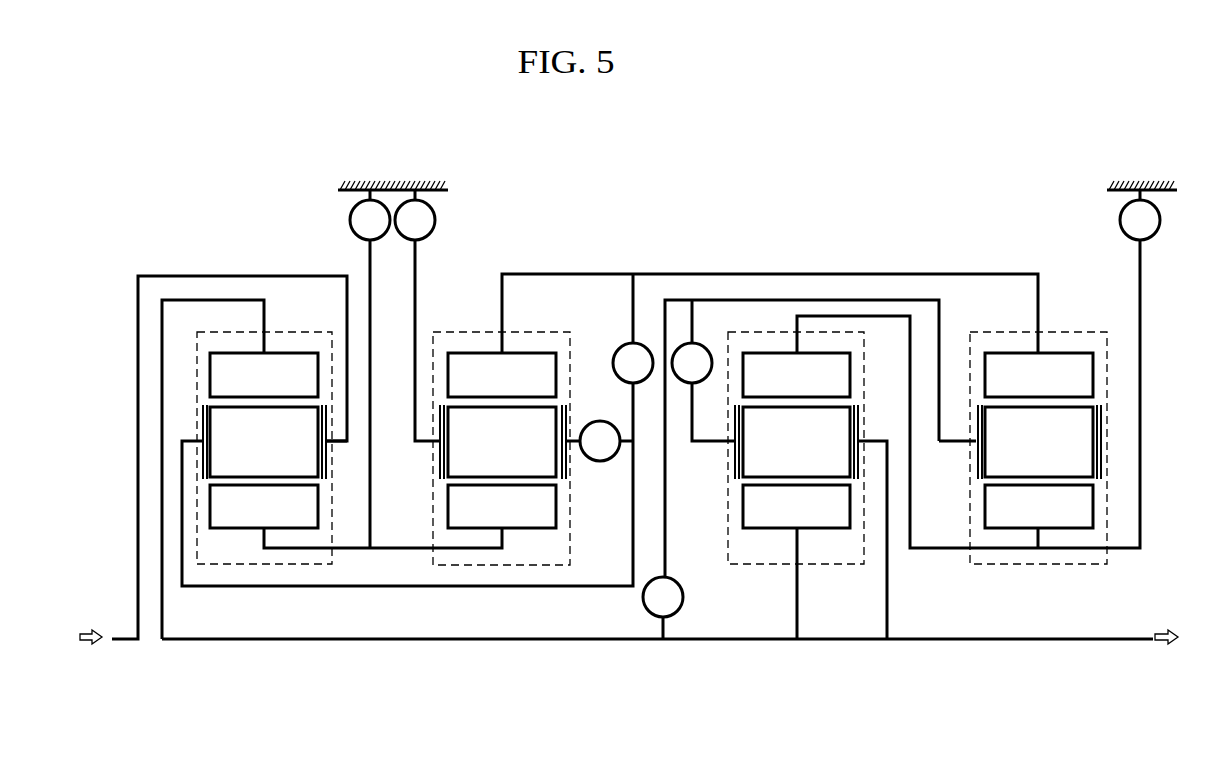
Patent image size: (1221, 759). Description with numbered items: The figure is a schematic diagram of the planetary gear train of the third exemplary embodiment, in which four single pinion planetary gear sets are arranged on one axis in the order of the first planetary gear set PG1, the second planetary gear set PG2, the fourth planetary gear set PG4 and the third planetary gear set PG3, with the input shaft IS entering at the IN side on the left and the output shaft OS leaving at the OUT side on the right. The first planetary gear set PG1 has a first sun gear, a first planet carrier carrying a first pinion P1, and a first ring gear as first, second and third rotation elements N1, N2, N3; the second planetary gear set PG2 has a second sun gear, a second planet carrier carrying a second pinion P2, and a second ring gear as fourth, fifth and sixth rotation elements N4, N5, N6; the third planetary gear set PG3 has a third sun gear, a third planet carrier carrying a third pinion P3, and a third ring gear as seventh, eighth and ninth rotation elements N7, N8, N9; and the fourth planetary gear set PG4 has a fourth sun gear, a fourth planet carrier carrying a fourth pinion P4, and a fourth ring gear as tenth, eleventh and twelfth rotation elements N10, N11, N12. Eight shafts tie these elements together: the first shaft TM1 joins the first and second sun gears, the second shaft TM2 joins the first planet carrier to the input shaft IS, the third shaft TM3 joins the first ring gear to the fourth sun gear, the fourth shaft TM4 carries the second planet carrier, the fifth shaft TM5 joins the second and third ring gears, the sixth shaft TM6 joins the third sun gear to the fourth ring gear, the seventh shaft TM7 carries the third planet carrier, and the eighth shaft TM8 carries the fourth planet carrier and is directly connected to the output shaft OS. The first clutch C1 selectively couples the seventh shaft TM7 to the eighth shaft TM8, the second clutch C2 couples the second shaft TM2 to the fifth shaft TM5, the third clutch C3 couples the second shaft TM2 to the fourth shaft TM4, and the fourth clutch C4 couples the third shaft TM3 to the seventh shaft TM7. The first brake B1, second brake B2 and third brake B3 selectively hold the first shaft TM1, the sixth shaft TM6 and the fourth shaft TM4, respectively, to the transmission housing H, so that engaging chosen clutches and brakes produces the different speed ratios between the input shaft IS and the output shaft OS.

The input shaft IS is at (125, 642).
The output shaft OS is at (1133, 642).
The input IN is at (78, 632).
The output OUT is at (1188, 640).
The transmission housing H is at (1144, 183).
The first planetary gear set PG1 is at (228, 583).
The second planetary gear set PG2 is at (504, 583).
The third planetary gear set PG3 is at (1074, 583).
The fourth planetary gear set PG4 is at (775, 583).
The first pinion P1 is at (264, 442).
The second pinion P2 is at (503, 442).
The third pinion P3 is at (1039, 442).
The fourth pinion P4 is at (796, 442).
The first rotation element N1 is at (264, 506).
The second rotation element N2 is at (340, 443).
The third rotation element N3 is at (264, 375).
The fourth rotation element N4 is at (502, 506).
The fifth rotation element N5 is at (425, 443).
The sixth rotation element N6 is at (502, 375).
The seventh rotation element N7 is at (1039, 506).
The eighth rotation element N8 is at (955, 443).
The ninth rotation element N9 is at (1039, 375).
The tenth rotation element N10 is at (796, 506).
The eleventh rotation element N11 is at (702, 445).
The twelfth rotation element N12 is at (796, 375).
The first shaft TM1 is at (403, 549).
The second shaft TM2 is at (181, 568).
The third shaft TM3 is at (622, 641).
The fourth shaft TM4 is at (417, 283).
The fifth shaft TM5 is at (722, 274).
The sixth shaft TM6 is at (940, 551).
The seventh shaft TM7 is at (878, 299).
The eighth shaft TM8 is at (887, 598).
The first clutch C1 is at (692, 363).
The second clutch C2 is at (633, 363).
The third clutch C3 is at (600, 441).
The fourth clutch C4 is at (663, 597).
The first brake B1 is at (370, 220).
The second brake B2 is at (1140, 220).
The third brake B3 is at (415, 220).